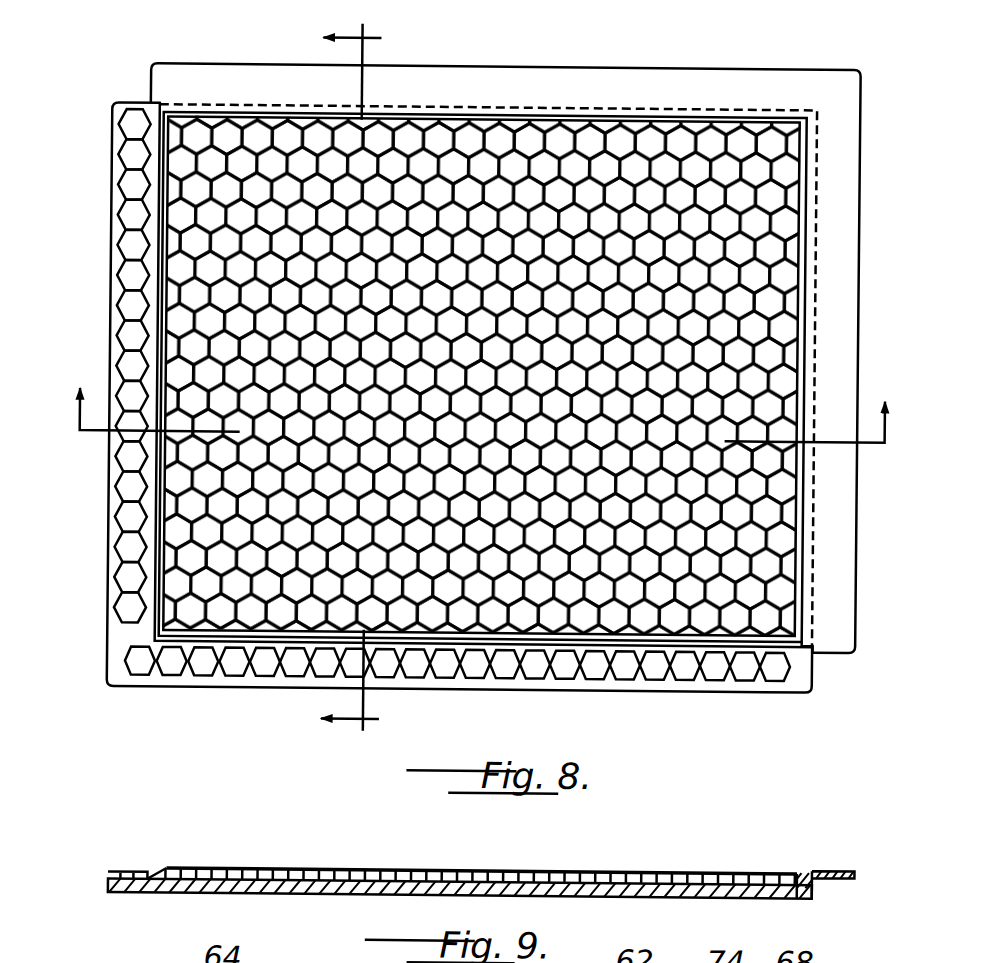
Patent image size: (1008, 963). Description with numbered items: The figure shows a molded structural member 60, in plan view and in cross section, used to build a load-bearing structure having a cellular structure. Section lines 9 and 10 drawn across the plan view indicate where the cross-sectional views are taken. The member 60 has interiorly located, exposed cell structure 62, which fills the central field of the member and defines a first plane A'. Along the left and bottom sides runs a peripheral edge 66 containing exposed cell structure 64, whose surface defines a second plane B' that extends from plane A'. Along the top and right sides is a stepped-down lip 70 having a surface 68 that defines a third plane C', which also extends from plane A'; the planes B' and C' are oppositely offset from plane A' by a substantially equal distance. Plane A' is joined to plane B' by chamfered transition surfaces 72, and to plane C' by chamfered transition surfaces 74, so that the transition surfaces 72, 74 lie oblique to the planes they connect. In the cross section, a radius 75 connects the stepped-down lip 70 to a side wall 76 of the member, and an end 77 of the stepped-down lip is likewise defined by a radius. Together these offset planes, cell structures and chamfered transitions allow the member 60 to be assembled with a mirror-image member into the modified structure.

In FIG. 8, the structural member 60 is at (127, 75).
In FIG. 9, the structural member 60 is at (148, 835).
In FIG. 8, the cell structure 62 is at (194, 271).
In FIG. 9, the cell structure 62 is at (488, 870).
In FIG. 8, the cell structure 64 is at (129, 523).
In FIG. 9, the cell structure 64 is at (142, 870).
In FIG. 8, the peripheral edge 66 is at (117, 108).
In FIG. 9, the peripheral edge 66 is at (128, 893).
In FIG. 8, the surface 68 is at (692, 83).
In FIG. 9, the surface 68 is at (815, 868).
In FIG. 8, the stepped-down lip 70 is at (147, 71).
In FIG. 9, the stepped-down lip 70 is at (818, 878).
In FIG. 8, the chamfered transition surfaces 72 is at (160, 240).
In FIG. 9, the chamfered transition surfaces 72 is at (168, 868).
In FIG. 8, the chamfered transition surfaces 74 is at (562, 117).
In FIG. 9, the chamfered transition surfaces 74 is at (802, 872).
In FIG. 9, the radius 75 is at (820, 885).
In FIG. 9, the side wall 76 is at (814, 893).
In FIG. 9, the end 77 is at (857, 874).
In FIG. 8, the line 9— 9 is at (477, 439).
In FIG. 8, the line 10— 10 is at (373, 376).